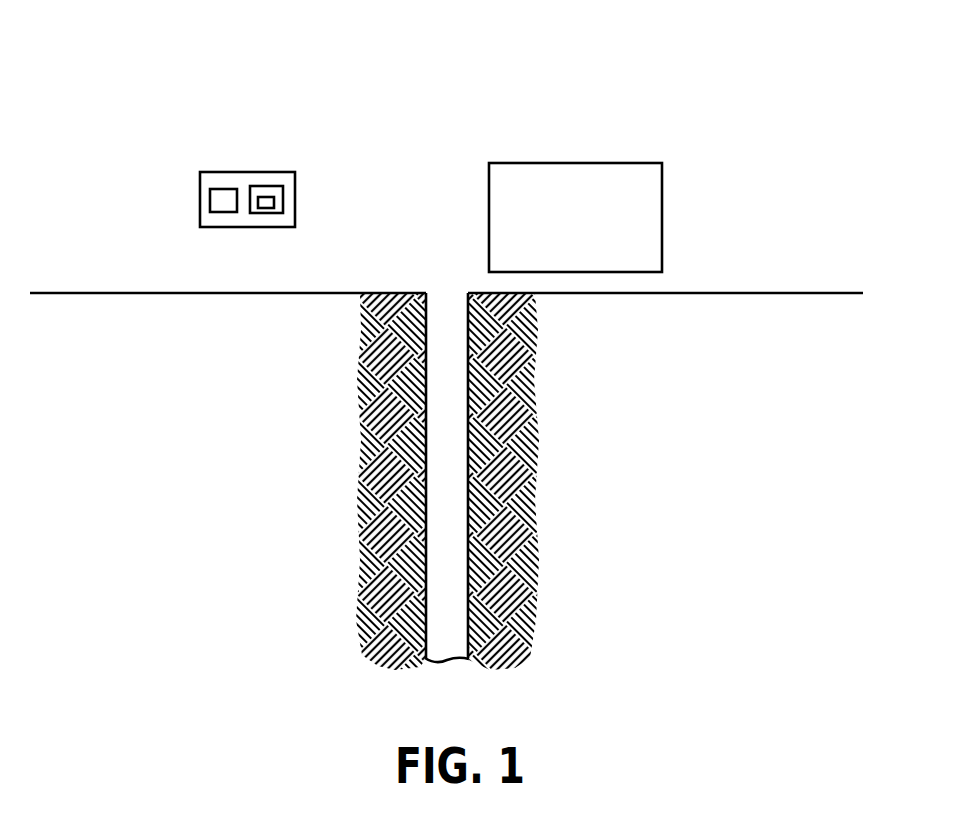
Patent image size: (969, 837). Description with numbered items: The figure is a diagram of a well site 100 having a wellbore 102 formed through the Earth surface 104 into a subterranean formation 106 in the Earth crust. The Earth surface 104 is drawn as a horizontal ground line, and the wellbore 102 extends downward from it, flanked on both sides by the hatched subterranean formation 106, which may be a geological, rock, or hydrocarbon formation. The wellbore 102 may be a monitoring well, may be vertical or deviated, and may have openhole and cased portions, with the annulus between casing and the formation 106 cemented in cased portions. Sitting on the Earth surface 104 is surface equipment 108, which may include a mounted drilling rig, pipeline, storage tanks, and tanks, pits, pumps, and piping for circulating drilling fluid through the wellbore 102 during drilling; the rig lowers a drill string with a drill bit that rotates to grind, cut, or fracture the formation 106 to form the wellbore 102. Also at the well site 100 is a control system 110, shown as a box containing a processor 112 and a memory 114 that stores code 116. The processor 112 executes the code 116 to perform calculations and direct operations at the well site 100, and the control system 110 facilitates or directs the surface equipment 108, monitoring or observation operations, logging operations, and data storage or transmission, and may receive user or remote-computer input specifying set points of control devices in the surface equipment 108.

The well site 100 is at (214, 88).
The wellbore 102 is at (424, 417).
The Earth surface 104 is at (776, 290).
The subterranean formation 106 is at (387, 507).
The surface equipment 108 is at (663, 187).
The control system 110 is at (217, 172).
The processor 112 is at (223, 212).
The memory 114 is at (283, 199).
The code 116 is at (266, 208).